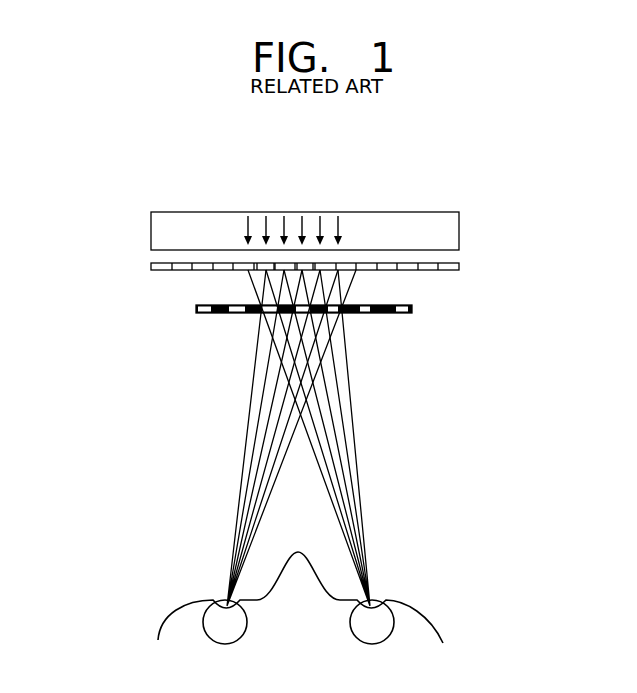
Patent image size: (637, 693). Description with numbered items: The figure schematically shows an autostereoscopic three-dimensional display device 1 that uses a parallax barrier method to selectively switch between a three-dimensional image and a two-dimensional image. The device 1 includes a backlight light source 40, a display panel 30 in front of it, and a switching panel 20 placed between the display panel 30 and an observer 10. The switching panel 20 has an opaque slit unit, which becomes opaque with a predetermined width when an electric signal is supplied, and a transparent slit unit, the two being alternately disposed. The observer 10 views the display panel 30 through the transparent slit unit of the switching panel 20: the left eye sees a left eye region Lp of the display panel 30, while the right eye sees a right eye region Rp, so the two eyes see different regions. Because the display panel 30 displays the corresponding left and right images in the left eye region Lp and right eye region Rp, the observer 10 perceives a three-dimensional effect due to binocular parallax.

The autostereoscopic 3D display device 1 is at (104, 223).
The observer 10 is at (423, 624).
The switching panel 20 is at (412, 307).
The display panel 30 is at (459, 268).
The backlight light source 40 is at (459, 233).
The right eye region Rp is at (297, 263).
The left eye region Lp is at (275, 266).